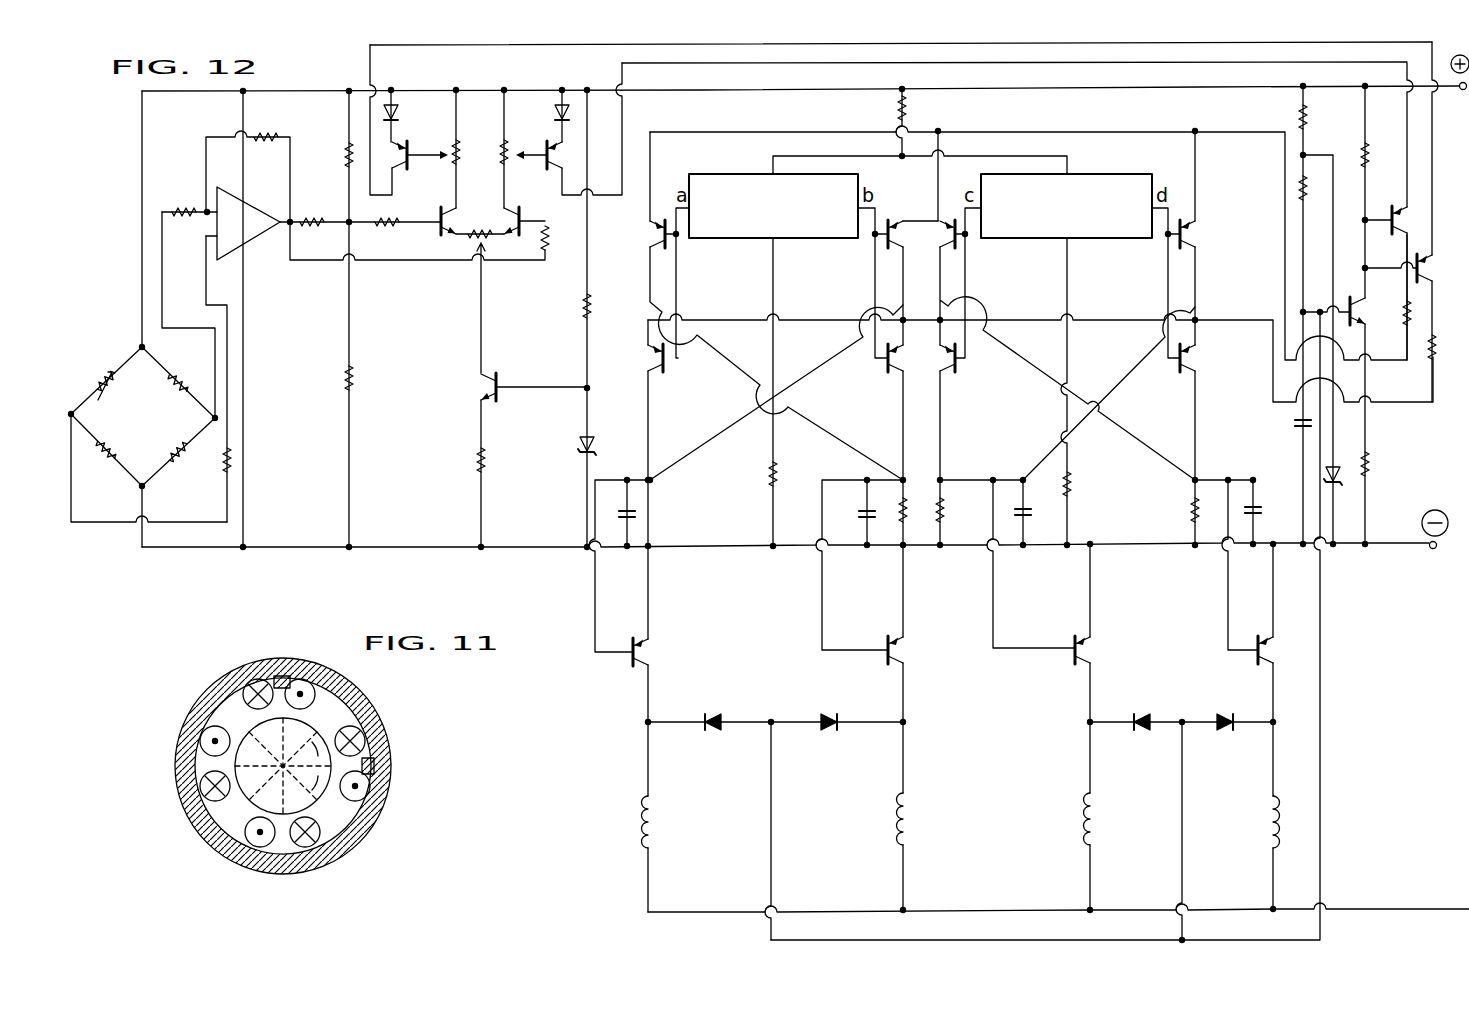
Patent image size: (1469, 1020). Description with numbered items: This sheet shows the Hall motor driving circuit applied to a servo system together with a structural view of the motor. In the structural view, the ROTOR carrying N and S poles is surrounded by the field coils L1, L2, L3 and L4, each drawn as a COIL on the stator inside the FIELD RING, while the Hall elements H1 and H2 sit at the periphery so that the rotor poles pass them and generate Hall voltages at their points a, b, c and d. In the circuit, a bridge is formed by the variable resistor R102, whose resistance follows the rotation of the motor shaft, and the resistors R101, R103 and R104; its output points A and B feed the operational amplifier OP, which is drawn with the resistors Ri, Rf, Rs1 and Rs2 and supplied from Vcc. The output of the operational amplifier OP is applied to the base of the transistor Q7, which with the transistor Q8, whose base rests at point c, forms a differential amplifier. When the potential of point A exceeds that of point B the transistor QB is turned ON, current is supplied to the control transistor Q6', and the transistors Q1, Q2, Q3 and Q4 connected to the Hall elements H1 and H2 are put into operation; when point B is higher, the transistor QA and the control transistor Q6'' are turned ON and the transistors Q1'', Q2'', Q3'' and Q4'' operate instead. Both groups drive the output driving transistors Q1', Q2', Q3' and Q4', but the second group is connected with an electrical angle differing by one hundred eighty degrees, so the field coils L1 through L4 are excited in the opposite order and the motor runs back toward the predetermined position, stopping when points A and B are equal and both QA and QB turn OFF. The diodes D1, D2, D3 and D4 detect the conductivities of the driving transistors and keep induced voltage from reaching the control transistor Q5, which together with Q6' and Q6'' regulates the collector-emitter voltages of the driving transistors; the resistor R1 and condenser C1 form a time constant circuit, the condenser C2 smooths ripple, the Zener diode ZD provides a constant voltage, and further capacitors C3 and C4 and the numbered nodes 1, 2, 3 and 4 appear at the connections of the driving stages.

In FIG. 12, the operational amplifier OP is at (243, 223).
In FIG. 12, the input resistor Ri is at (184, 200).
In FIG. 12, the feedback resistor Rf is at (248, 176).
In FIG. 12, the resistor Rs1 is at (330, 156).
In FIG. 12, the resistor Rs2 is at (371, 384).
In FIG. 12, the resistor R101 is at (184, 364).
In FIG. 12, the variable resistor R102 is at (92, 367).
In FIG. 12, the resistor R103 is at (96, 465).
In FIG. 12, the resistor R104 is at (161, 445).
In FIG. 12, the transistor QA is at (396, 168).
In FIG. 12, the transistor QB is at (564, 168).
In FIG. 12, the transistor Q7 is at (510, 215).
In FIG. 12, the transistor Q8 is at (440, 237).
In FIG. 12, the driving transistor Q1 is at (638, 190).
In FIG. 12, the driving transistor Q2 is at (906, 215).
In FIG. 12, the driving transistor Q3 is at (936, 208).
In FIG. 12, the driving transistor Q4 is at (1208, 189).
In FIG. 12, the control transistor Q5 is at (1353, 310).
In FIG. 12, the driving transistor Q1' is at (668, 633).
In FIG. 12, the driving transistor Q2' is at (925, 633).
In FIG. 12, the driving transistor Q3' is at (1111, 633).
In FIG. 12, the driving transistor Q4' is at (1258, 633).
In FIG. 12, the transistor Q1'' is at (629, 433).
In FIG. 12, the transistor Q2'' is at (886, 379).
In FIG. 12, the transistor Q3'' is at (965, 379).
In FIG. 12, the transistor Q4'' is at (1216, 363).
In FIG. 12, the control transistor Q6' is at (1391, 211).
In FIG. 12, the control transistor Q6'' is at (1443, 222).
In FIG. 12, the condenser C1 is at (618, 566).
In FIG. 12, the condenser C2 is at (859, 565).
In FIG. 12, the capacitor C3 is at (1007, 564).
In FIG. 12, the capacitor C4 is at (1241, 565).
In FIG. 12, the resistor R1 is at (1318, 199).
In FIG. 12, the Zener diode ZD is at (1344, 457).
In FIG. 12, the diode D1 is at (716, 739).
In FIG. 12, the diode D2 is at (830, 739).
In FIG. 12, the diode D3 is at (1141, 739).
In FIG. 12, the diode D4 is at (1223, 739).
In FIG. 12, the field coil L1 is at (664, 817).
In FIG. 12, the field coil L2 is at (920, 816).
In FIG. 12, the field coil L3 is at (1106, 816).
In FIG. 12, the field coil L4 is at (1257, 815).
In FIG. 12, the Hall element H1 is at (723, 238).
In FIG. 11, the Hall element H1 is at (283, 676).
In FIG. 12, the Hall element H2 is at (1018, 238).
In FIG. 11, the Hall element H2 is at (374, 765).
In FIG. 12, the circuit node 1 is at (657, 491).
In FIG. 12, the circuit node 2 is at (913, 487).
In FIG. 12, the circuit node 3 is at (928, 487).
In FIG. 12, the circuit node 4 is at (1183, 490).
In FIG. 12, the point A is at (86, 415).
In FIG. 12, the point B is at (199, 421).
In FIG. 12, the point C c is at (347, 223).
In FIG. 12, the supply voltage Vcc is at (290, 319).
In FIG. 11, the rotor ROTOR is at (243, 798).
In FIG. 11, the field ring FIELD RING is at (345, 847).
In FIG. 11, the field coil COIL is at (285, 794).